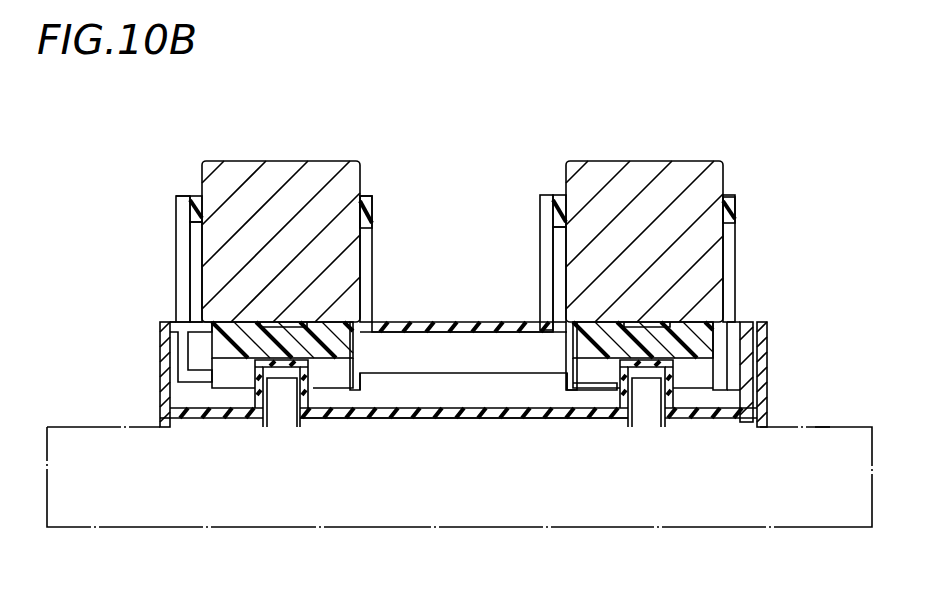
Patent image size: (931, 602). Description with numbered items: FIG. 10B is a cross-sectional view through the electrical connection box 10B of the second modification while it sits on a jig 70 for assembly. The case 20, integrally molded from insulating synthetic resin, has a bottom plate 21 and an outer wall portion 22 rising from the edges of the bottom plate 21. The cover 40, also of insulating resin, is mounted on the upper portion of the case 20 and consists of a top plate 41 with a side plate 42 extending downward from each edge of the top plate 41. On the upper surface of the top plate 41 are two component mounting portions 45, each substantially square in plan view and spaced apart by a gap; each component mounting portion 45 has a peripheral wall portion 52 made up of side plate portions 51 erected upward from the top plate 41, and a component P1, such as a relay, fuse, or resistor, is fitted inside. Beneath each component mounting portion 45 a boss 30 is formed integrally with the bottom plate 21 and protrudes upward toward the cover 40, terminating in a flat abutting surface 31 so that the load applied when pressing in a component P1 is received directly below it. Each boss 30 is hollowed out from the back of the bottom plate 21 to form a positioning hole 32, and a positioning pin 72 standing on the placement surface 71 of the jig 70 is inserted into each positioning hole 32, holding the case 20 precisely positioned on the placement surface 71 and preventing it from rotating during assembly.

The electrical connection box 10B is at (196, 150).
The component P1 is at (275, 158).
The case 20 is at (196, 422).
The bottom plate 21 is at (435, 420).
The outer wall portion 22 is at (160, 413).
The boss 30 is at (316, 398).
The abutting surface 31 is at (300, 348).
The positioning hole 32 is at (297, 383).
The cover 40 is at (163, 323).
The top plate 41 is at (222, 354).
The side plate 42 is at (158, 343).
The component mounting portion 45 is at (177, 195).
The side plate portion 51 is at (372, 240).
The peripheral wall portion 52 is at (376, 203).
The jig 70 is at (868, 424).
The placement surface 71 is at (830, 425).
The positioning pin 72 is at (262, 414).